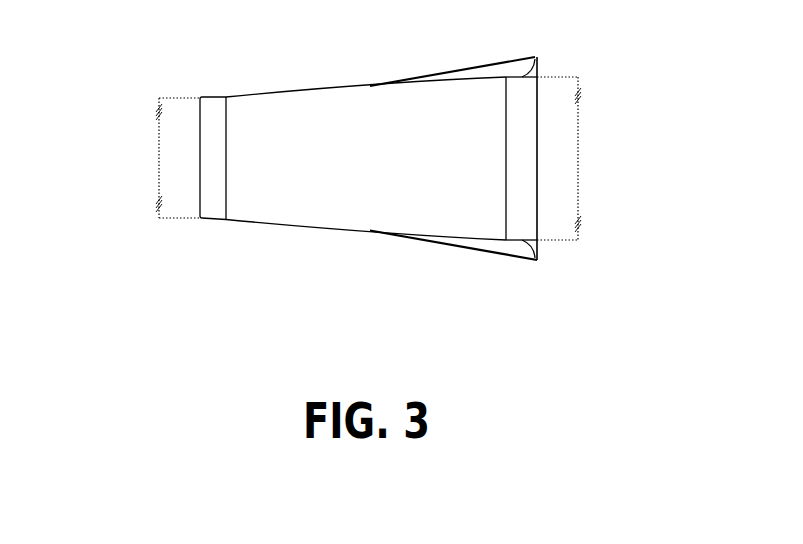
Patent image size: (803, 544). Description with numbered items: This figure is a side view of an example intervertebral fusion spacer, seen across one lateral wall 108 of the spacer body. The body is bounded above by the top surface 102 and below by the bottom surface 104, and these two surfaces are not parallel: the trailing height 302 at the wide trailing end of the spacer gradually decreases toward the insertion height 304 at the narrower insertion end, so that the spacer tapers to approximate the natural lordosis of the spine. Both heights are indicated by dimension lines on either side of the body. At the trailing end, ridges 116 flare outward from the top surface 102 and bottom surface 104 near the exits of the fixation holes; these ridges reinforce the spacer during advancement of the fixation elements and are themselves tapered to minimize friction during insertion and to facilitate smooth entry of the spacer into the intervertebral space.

The top surface 102 is at (340, 86).
The bottom surface 104 is at (348, 229).
The lateral wall 108 is at (350, 158).
The ridges 116 is at (507, 57).
The trailing height 302 is at (578, 165).
The insertion height 304 is at (160, 170).